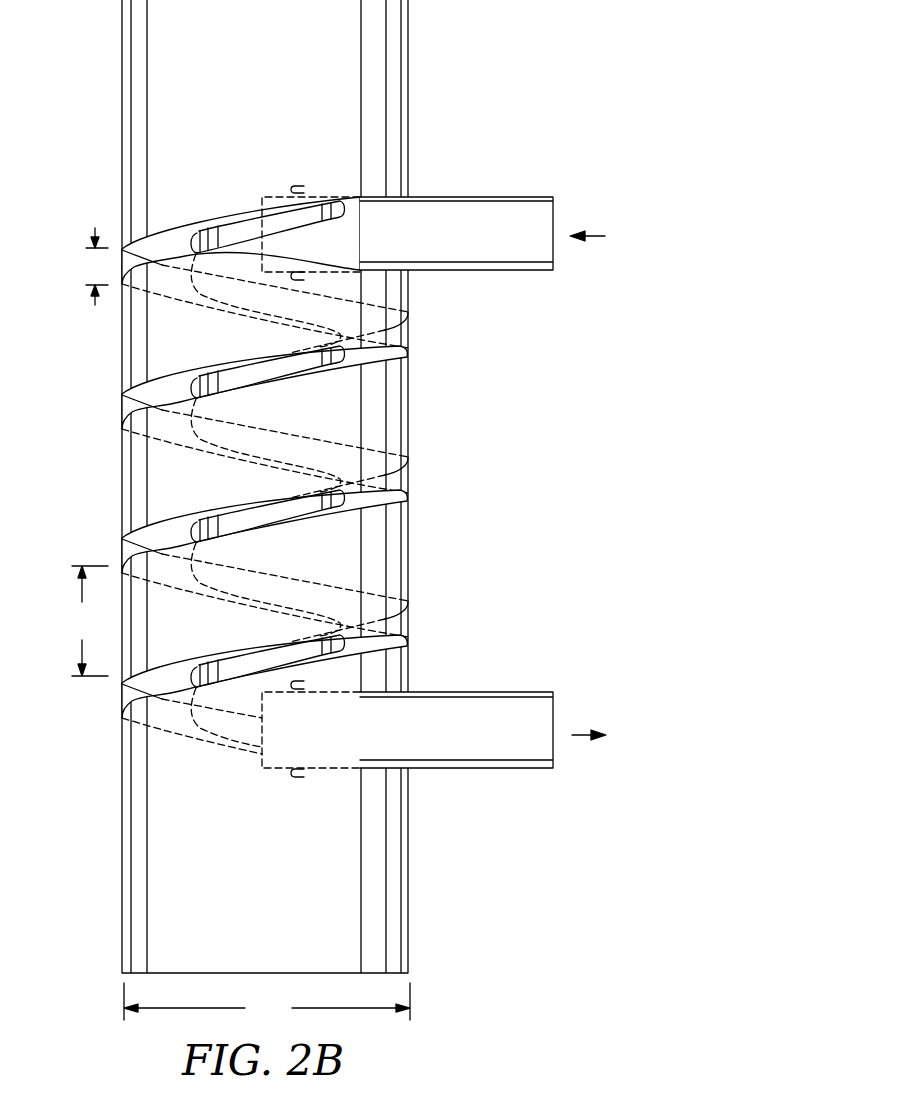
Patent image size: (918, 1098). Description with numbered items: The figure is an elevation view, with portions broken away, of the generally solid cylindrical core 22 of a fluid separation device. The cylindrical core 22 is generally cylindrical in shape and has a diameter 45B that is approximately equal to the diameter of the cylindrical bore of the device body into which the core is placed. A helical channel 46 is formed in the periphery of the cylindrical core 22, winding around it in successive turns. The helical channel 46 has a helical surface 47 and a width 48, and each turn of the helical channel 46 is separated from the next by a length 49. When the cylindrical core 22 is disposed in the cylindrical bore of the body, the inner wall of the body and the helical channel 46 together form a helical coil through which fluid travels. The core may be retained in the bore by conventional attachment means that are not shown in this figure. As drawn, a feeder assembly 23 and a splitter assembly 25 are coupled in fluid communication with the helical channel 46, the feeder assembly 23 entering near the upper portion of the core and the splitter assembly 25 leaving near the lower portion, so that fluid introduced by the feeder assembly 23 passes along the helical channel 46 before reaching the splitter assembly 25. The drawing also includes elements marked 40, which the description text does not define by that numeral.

The cylindrical core 22 is at (278, 97).
The feeder assembly 23 is at (483, 196).
The splitter assembly 25 is at (483, 691).
The sensors 40 is at (299, 273).
The diameter 45B is at (267, 1002).
The helical channel 46 is at (127, 406).
The helical surface 47 is at (216, 232).
The width 48 is at (86, 262).
The length 49 is at (88, 621).